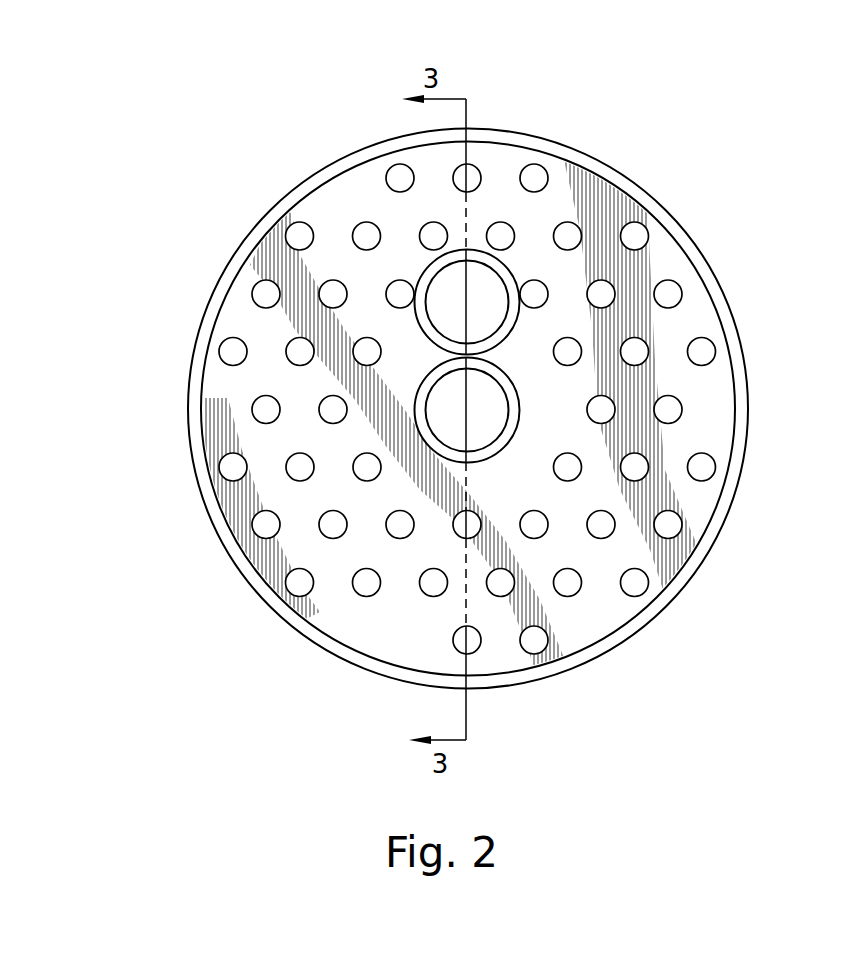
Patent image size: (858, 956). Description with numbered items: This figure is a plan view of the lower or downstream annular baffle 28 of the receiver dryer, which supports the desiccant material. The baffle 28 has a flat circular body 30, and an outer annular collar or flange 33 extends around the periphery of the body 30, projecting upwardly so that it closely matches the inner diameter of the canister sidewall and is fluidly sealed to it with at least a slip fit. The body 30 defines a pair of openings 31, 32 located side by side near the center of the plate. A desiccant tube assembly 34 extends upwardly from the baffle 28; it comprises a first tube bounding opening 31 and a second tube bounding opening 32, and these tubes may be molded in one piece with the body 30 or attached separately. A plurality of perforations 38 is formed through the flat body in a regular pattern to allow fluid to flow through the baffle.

The lower annular baffle 28 is at (613, 168).
The flat circular body 30 is at (675, 325).
The first opening 31 is at (472, 421).
The second opening 32 is at (472, 313).
The outer annular flange 33 is at (632, 635).
The desiccant tube assembly 34 is at (396, 385).
The perforations 38 is at (638, 580).